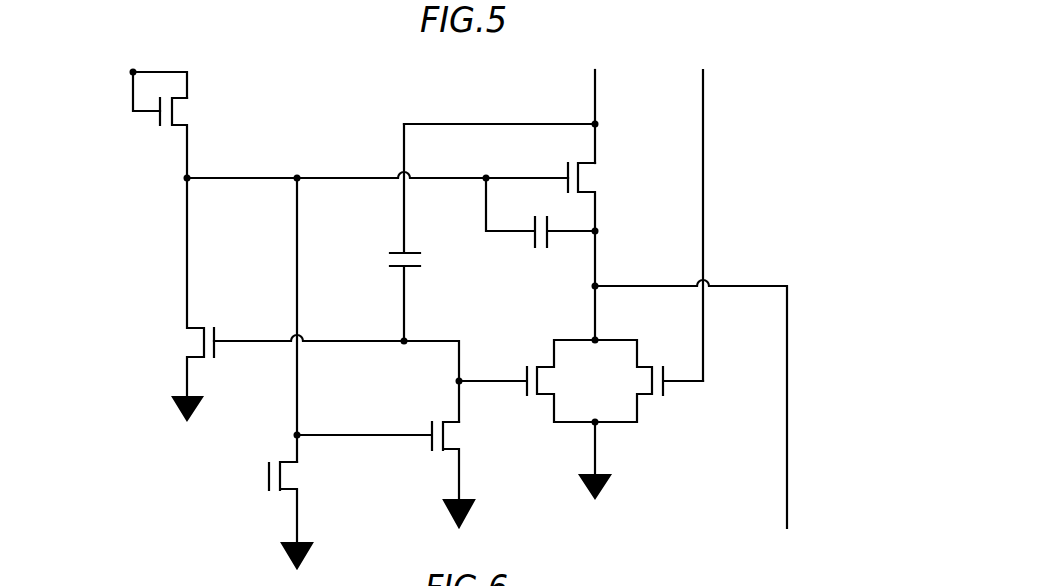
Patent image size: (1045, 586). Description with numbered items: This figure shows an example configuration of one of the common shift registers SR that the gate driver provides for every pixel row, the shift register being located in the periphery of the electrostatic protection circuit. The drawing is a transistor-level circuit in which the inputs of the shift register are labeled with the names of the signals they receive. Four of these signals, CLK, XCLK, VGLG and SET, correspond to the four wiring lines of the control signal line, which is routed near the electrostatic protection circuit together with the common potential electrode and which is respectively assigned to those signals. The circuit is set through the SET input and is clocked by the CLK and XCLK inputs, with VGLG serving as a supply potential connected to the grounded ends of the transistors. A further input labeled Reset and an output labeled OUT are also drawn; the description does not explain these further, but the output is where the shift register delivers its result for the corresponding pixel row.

The set signal SET is at (133, 72).
The clock signal CLK is at (595, 103).
The inverted clock signal XCLK is at (703, 212).
The gate low potential VGLG is at (298, 471).
The reset signal input Reset is at (269, 477).
The output terminal OUT is at (701, 419).